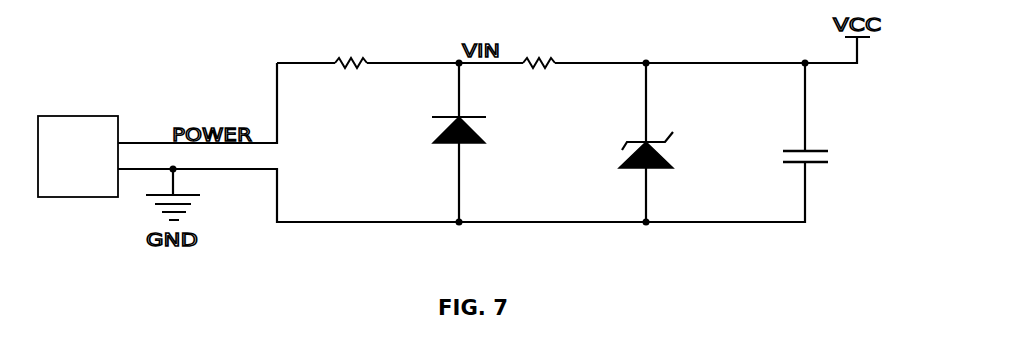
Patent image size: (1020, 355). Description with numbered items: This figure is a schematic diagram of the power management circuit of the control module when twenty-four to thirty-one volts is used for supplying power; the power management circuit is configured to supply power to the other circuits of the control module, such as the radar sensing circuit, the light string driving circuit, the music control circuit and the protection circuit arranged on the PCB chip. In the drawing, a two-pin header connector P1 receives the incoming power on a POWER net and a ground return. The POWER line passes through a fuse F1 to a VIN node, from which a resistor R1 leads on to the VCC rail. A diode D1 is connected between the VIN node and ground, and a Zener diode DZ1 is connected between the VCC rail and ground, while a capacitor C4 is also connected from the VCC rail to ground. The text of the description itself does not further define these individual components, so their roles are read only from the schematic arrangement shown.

The header connector (Header 2) P1 is at (82, 158).
The fuse (0.5A 30V) F1 is at (367, 80).
The resistor (2.4K) R1 is at (534, 81).
The diode (M7) D1 is at (476, 141).
The zener diode (5V1) DZ1 is at (709, 156).
The capacitor (1uF/25V) C4 is at (844, 181).